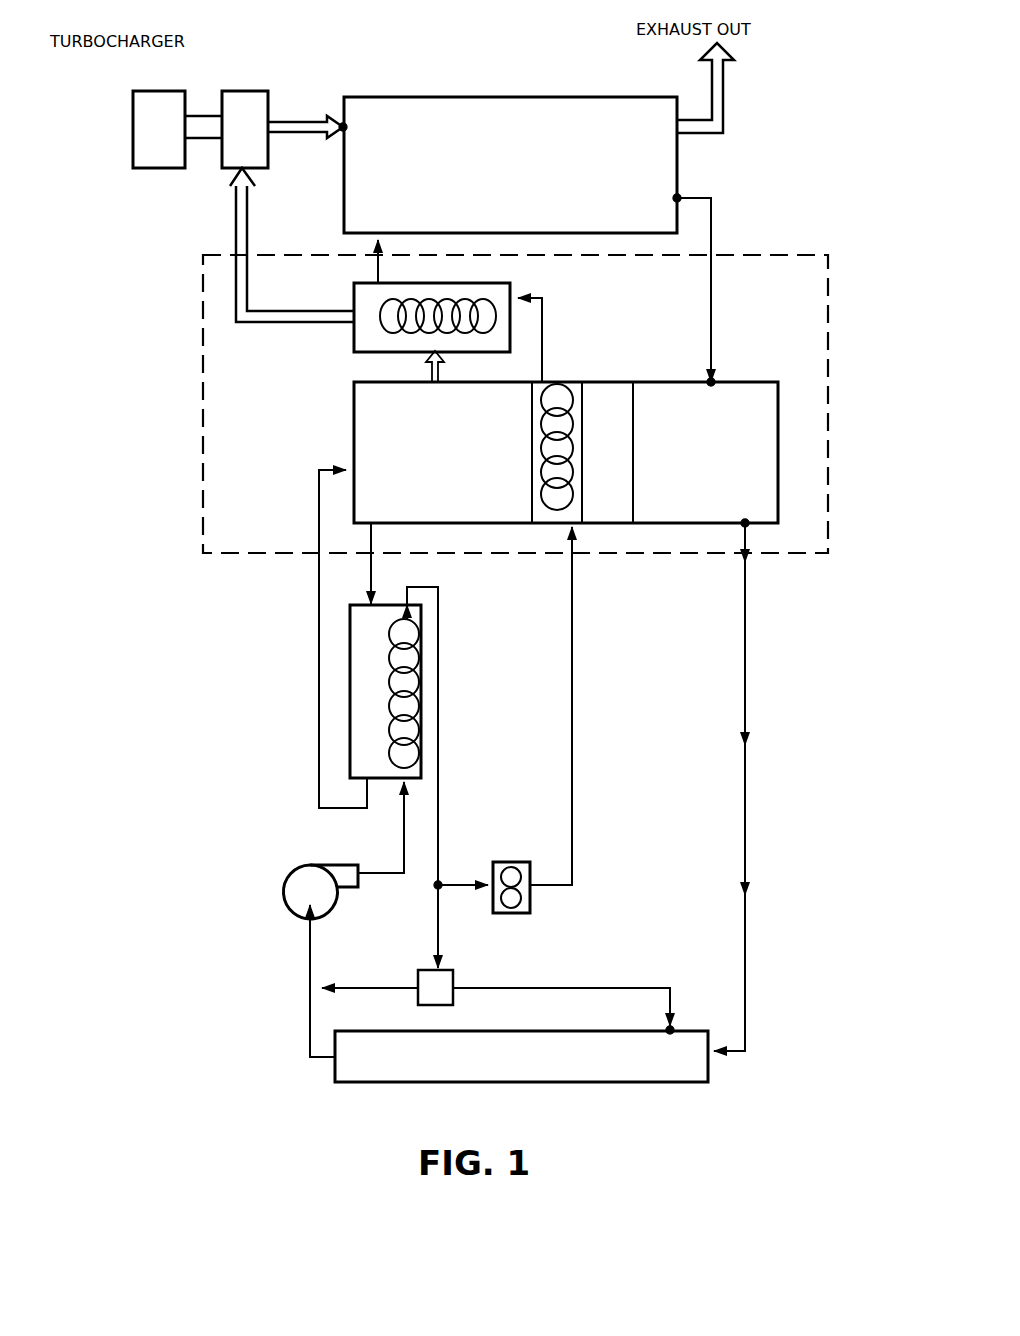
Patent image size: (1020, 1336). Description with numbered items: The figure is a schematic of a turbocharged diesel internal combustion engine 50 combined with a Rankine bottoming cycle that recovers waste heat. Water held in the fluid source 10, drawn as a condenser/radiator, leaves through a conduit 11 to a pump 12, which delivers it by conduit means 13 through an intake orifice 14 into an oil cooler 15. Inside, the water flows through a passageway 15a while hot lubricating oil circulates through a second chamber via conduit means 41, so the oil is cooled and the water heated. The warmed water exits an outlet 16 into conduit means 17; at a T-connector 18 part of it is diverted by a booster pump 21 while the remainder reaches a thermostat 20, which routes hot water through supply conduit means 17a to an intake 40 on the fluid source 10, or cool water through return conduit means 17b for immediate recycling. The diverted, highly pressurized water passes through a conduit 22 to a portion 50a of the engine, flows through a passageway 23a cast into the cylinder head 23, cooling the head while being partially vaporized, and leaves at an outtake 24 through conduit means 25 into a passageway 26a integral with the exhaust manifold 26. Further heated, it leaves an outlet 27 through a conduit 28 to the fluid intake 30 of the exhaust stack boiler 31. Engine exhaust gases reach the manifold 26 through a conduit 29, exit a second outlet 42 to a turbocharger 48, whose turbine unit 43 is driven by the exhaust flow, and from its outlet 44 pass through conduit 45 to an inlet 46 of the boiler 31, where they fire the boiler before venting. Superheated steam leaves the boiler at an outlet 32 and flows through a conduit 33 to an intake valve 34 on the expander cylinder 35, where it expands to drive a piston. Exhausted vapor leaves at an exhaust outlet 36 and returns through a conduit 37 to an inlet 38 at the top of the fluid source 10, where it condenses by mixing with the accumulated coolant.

The fluid source 10 is at (372, 1085).
The conduit 11 is at (310, 1010).
The pump 12 is at (300, 868).
The conduit means 13 is at (400, 838).
The intake orifice 14 is at (395, 778).
The oil cooler 15 is at (350, 640).
The passageway 15a is at (422, 715).
The outlet 16 is at (370, 600).
The conduit means 17 is at (440, 675).
The supply conduit means 17a is at (665, 985).
The return conduit means 17b is at (360, 985).
The T-connector 18 is at (428, 889).
The thermostat 20 is at (430, 993).
The booster pump 21 is at (513, 860).
The conduit 22 is at (573, 780).
The cylinder head 23 is at (588, 397).
The passageway 23a is at (550, 505).
The outtake 24 is at (545, 377).
The conduit means 25 is at (545, 312).
The exhaust manifold 26 is at (352, 348).
The passageway 26a is at (472, 300).
The outlet 27 is at (375, 276).
The conduit 28 is at (372, 263).
The conduit 29 is at (442, 375).
The fluid intake 30 is at (365, 243).
The exhaust stack boiler 31 is at (447, 112).
The outlet 32 is at (680, 195).
The conduit 33 is at (712, 230).
The intake valve 34 is at (714, 378).
The expander cylinder 35 is at (765, 400).
The exhaust outlet 36 is at (752, 528).
The conduit 37 is at (746, 935).
The inlet 38 is at (712, 1055).
The intake 40 is at (674, 1030).
The conduit means 41 is at (318, 690).
The second outlet 42 is at (352, 325).
The turbine 43 is at (238, 170).
The outlet 44 is at (278, 120).
The conduit 45 is at (298, 120).
The inlet 46 is at (337, 118).
The turbocharger 48 is at (188, 104).
The internal combustion engine 50 is at (830, 292).
The portion 50a is at (578, 525).